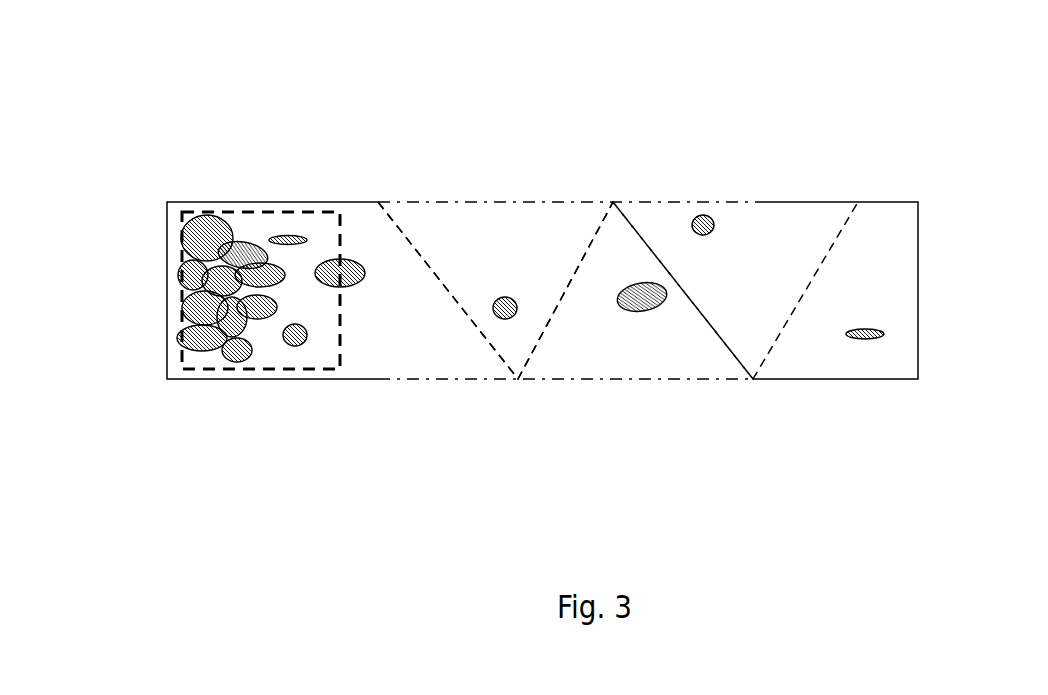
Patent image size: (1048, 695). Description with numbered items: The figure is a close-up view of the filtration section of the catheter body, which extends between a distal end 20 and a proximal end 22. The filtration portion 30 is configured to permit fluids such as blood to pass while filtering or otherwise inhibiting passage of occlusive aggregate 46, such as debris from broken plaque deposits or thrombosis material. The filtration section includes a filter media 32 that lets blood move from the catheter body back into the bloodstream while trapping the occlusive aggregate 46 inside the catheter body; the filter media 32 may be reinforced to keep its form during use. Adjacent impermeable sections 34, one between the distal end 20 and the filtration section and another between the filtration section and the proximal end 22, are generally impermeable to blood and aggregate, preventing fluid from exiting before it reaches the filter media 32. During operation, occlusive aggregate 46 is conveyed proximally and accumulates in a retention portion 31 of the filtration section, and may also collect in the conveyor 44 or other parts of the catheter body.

The distal end 20 is at (918, 315).
The proximal end 22 is at (167, 245).
The filtration portion 30 is at (405, 130).
The retention portion 31 is at (273, 368).
The filter media 32 is at (592, 203).
The impermeable section 34 is at (885, 200).
The conveyor 44 is at (532, 350).
The occlusive aggregate 46 is at (717, 208).